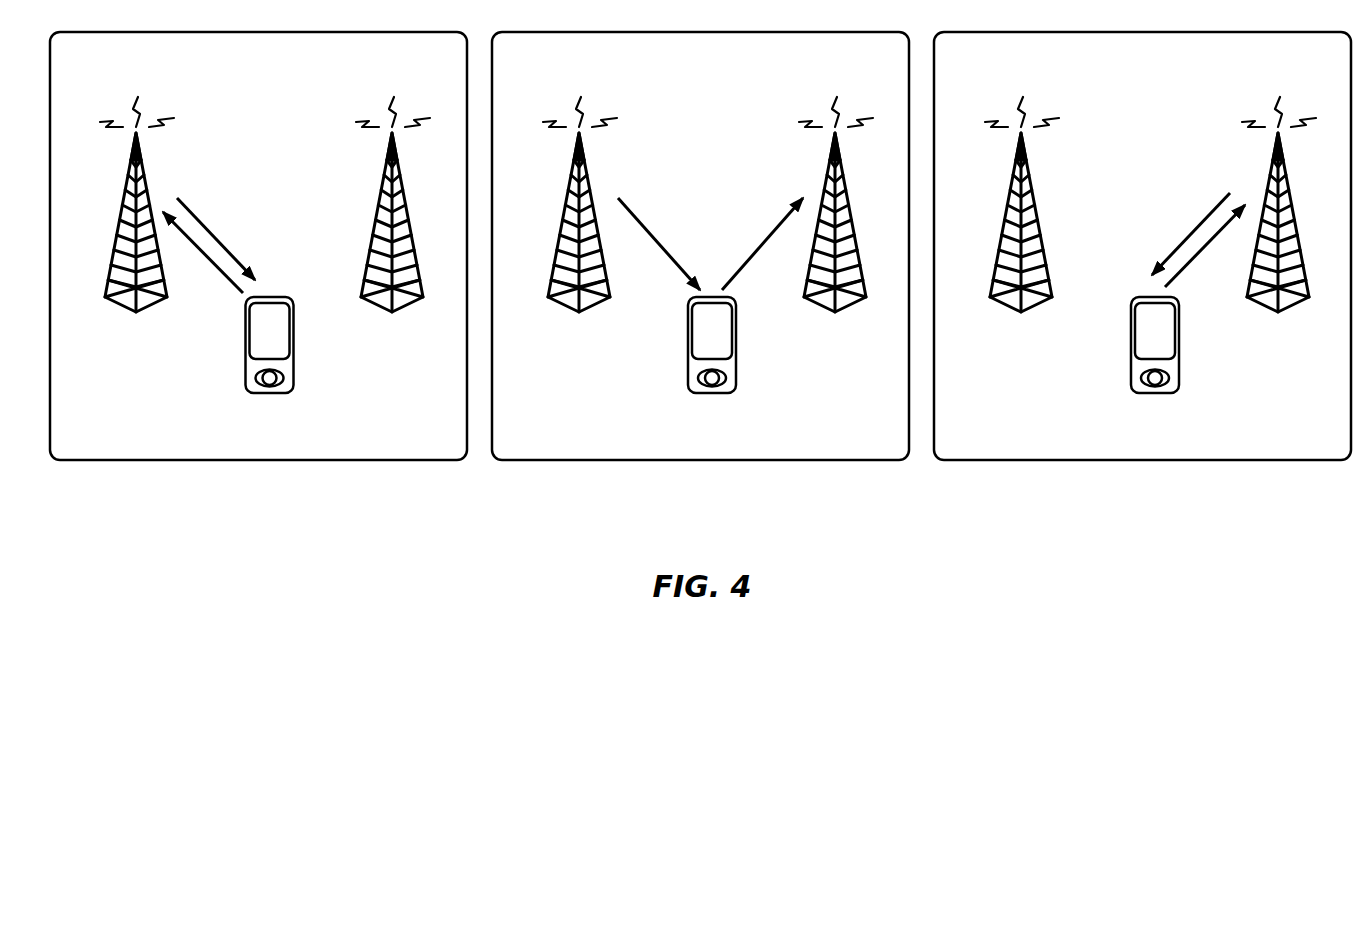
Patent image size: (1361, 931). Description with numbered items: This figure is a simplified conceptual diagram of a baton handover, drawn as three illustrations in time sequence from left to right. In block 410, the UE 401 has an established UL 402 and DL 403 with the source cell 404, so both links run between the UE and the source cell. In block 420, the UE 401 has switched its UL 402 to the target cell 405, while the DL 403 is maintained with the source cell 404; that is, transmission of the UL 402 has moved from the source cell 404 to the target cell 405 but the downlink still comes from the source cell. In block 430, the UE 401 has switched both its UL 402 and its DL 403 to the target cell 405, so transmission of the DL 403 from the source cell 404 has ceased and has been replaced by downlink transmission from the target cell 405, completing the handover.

The UE 401 is at (272, 393).
The UL 402 is at (205, 256).
The DL 403 is at (216, 238).
The source cell 404 is at (123, 203).
The target cell 405 is at (399, 168).
The block 410 is at (360, 460).
The block 420 is at (802, 460).
The block 430 is at (1245, 460).